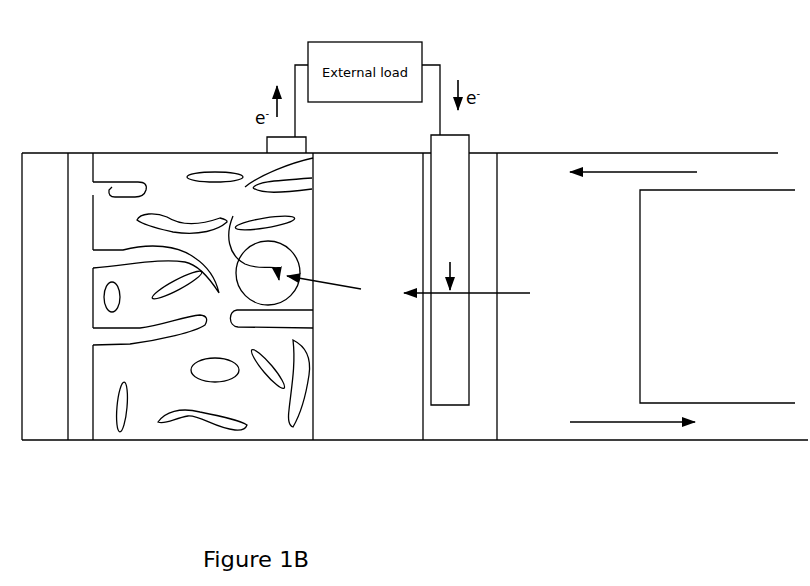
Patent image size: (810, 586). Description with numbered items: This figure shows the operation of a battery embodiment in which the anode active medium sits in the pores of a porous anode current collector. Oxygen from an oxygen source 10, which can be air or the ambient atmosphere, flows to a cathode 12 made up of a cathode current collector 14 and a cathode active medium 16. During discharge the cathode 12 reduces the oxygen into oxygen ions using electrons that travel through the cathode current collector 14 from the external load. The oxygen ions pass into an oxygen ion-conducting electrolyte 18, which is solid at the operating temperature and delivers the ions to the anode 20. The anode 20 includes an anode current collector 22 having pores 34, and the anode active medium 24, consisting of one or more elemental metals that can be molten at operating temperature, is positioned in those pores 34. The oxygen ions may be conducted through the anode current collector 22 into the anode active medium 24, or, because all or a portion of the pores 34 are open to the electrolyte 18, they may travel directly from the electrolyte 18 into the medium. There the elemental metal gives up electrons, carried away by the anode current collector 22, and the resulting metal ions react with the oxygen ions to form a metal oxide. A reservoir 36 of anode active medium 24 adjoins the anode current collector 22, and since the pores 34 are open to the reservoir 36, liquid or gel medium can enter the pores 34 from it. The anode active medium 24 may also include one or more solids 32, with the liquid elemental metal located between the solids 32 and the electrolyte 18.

The oxygen source 10 is at (499, 443).
The cathode 12 is at (425, 443).
The cathode current collector 14 is at (453, 371).
The cathode active medium 16 is at (483, 404).
The oxygen ion-conducting electrolyte 18 is at (313, 443).
The anode 20 is at (313, 443).
The anode current collector 22 is at (244, 166).
The anode active medium 24 is at (114, 196).
The solids 32 is at (53, 168).
The pores 34 is at (145, 183).
The reservoir 36 is at (80, 168).